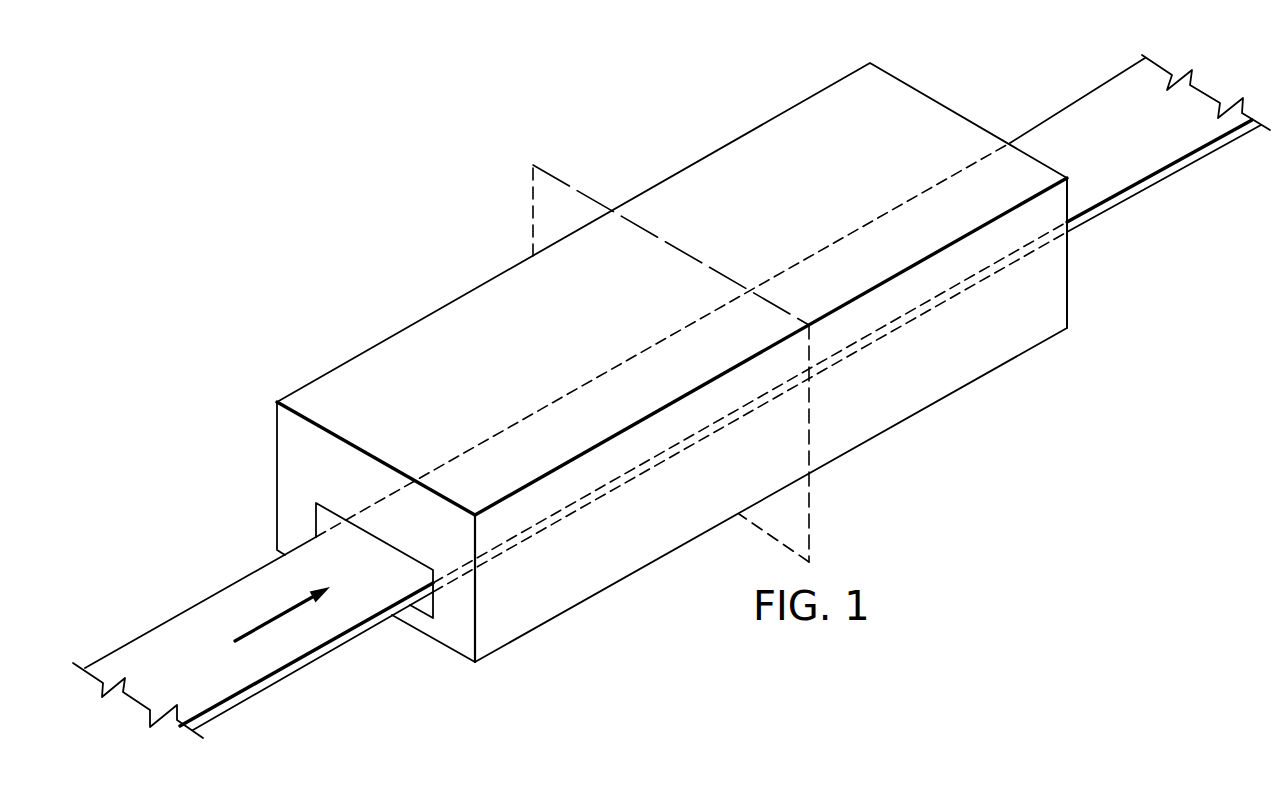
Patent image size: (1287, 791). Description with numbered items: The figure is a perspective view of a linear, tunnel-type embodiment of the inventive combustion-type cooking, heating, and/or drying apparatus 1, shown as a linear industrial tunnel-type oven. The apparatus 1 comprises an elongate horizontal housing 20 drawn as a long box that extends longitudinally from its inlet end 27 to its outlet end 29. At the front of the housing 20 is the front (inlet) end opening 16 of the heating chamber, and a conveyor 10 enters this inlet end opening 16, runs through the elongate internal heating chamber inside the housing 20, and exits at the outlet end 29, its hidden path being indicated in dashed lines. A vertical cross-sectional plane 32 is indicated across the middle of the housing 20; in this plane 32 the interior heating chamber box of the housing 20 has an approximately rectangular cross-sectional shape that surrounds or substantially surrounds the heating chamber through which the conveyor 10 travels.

The combustion-type cooking, heating, and/or drying apparatus 1 is at (466, 151).
The conveyor 10 is at (330, 651).
The front (inlet) end opening 16 is at (318, 512).
The elongate horizontal housing 20 is at (412, 322).
The inlet end 27 is at (283, 473).
The outlet end 29 is at (1068, 280).
The vertical cross-sectional plane 32 is at (812, 517).